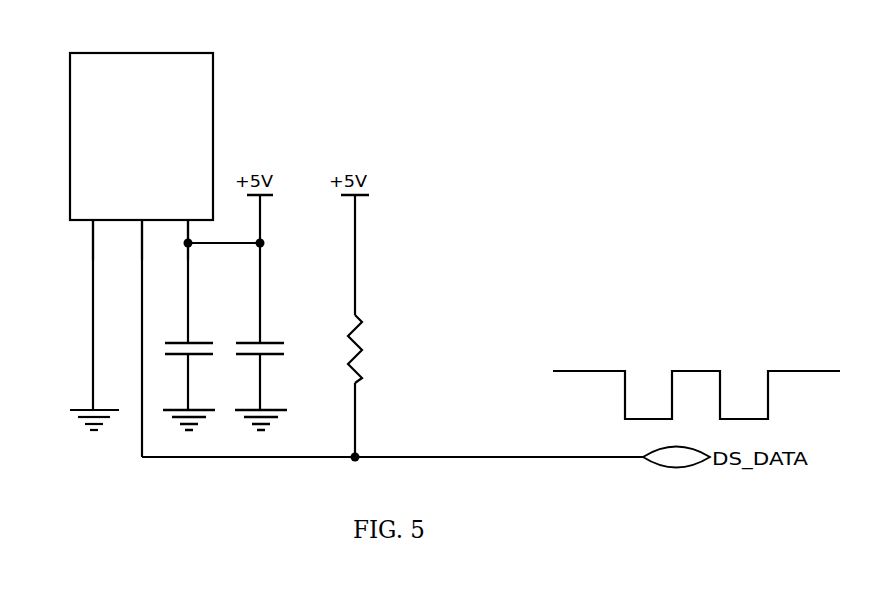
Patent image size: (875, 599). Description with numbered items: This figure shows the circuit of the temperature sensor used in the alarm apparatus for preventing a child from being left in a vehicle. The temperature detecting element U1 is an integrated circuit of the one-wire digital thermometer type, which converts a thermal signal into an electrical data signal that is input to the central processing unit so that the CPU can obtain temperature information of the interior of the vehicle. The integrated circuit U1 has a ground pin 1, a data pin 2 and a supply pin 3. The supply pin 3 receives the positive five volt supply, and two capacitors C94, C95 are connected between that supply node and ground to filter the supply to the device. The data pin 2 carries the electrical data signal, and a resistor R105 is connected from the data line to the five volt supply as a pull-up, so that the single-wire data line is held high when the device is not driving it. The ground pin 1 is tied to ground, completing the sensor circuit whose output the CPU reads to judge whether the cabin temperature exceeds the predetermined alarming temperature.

The DS18B20 temperature sensor U1 is at (141, 255).
The GND pin of U1 1 is at (84, 240).
The DQ pin of U1 2 is at (132, 240).
The VDD pin of U1 3 is at (178, 240).
The capacitor C94 is at (189, 386).
The capacitor C95 is at (261, 386).
The pull-up resistor R105 is at (394, 326).